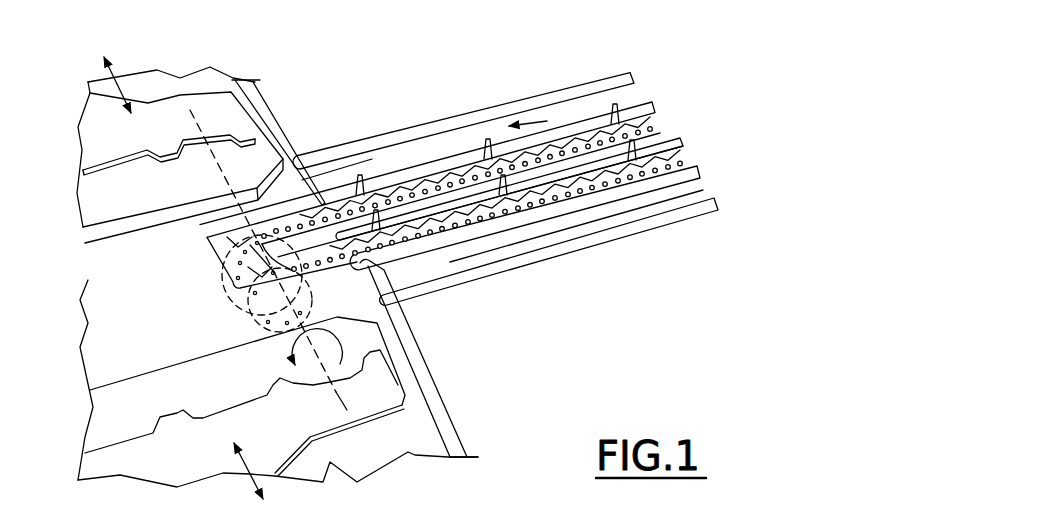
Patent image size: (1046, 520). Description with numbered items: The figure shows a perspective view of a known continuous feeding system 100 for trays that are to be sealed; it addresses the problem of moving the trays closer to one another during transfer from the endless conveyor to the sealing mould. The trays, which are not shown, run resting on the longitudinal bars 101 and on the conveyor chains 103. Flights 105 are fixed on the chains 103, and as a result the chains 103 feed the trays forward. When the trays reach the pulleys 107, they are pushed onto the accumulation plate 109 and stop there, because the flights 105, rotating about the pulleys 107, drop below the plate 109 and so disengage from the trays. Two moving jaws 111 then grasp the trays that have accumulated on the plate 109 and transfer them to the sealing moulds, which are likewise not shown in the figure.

The feeding system 100 is at (657, 266).
The longitudinal bars 101 is at (590, 86).
The conveyor chains 103 is at (455, 160).
The flights 105 is at (356, 192).
The pulleys 107 is at (243, 247).
The accumulation plate 109 is at (278, 120).
The moving jaws 111 is at (193, 95).